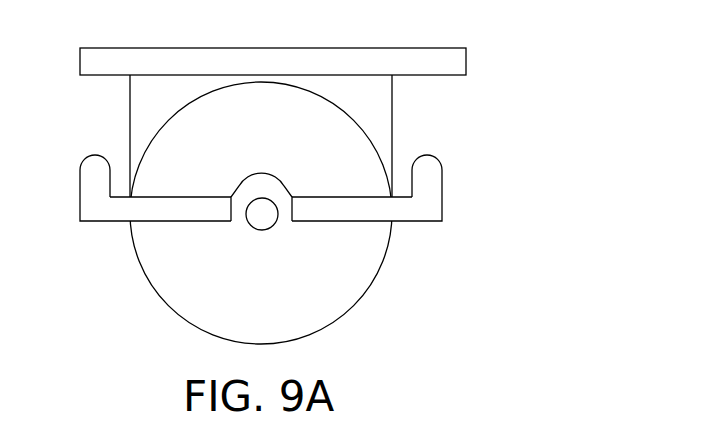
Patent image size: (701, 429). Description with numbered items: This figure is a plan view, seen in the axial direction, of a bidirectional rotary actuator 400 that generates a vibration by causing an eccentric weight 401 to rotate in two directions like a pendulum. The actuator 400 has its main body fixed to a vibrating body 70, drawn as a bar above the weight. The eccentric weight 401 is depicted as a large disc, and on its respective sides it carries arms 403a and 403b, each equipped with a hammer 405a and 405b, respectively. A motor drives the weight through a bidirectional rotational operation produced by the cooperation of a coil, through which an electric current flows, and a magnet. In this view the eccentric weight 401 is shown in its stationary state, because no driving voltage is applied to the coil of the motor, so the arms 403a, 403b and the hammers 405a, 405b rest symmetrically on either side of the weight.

The actuator 400 is at (326, 194).
The eccentric weight 401 is at (333, 297).
The vibrating body 70 is at (466, 58).
The arm 403a is at (95, 224).
The arm 403b is at (428, 224).
The hammer 405a is at (87, 158).
The hammer 405b is at (428, 158).